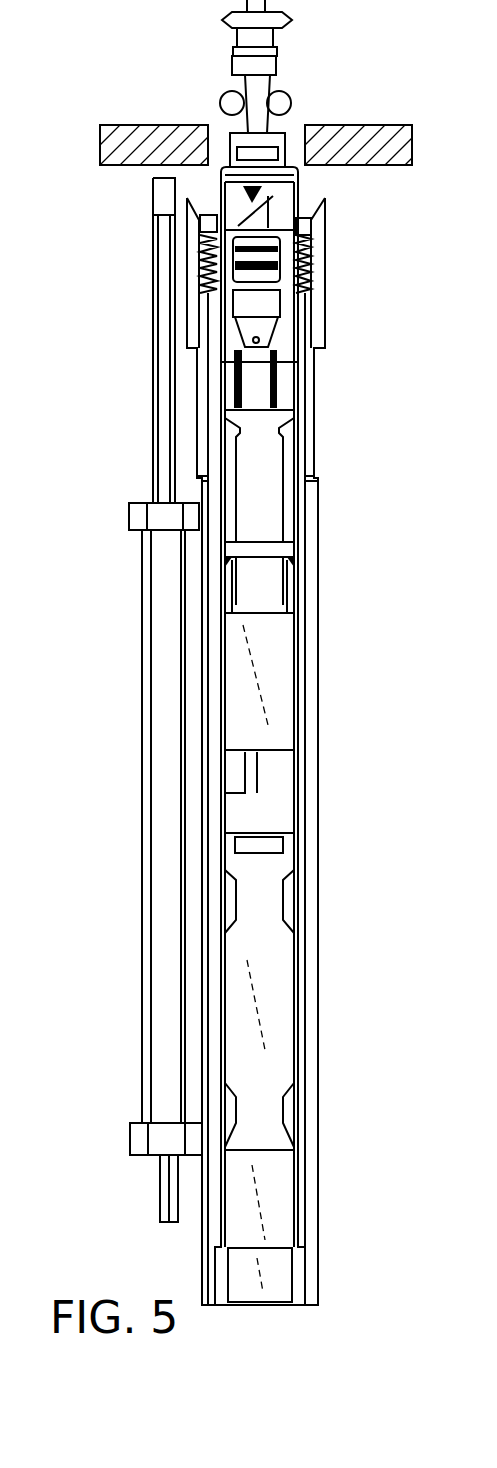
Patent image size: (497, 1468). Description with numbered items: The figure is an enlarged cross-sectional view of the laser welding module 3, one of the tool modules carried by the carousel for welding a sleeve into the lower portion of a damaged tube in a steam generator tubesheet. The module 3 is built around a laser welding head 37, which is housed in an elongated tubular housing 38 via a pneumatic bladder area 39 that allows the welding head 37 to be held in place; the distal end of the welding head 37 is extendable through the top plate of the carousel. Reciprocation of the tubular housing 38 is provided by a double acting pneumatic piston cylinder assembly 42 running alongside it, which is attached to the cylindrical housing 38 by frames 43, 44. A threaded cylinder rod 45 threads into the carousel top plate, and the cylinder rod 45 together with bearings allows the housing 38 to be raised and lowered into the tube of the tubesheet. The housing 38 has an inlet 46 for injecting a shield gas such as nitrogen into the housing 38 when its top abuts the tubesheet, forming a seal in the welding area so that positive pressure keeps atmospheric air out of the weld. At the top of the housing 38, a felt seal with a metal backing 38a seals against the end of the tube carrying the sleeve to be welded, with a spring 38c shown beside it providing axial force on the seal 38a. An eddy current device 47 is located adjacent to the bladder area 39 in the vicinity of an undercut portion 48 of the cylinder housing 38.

The laser welding module 3 is at (335, 786).
The laser welding head 37 is at (300, 76).
The elongated tubular housing 38 is at (192, 288).
The felt seal with a metal backing 38a is at (325, 228).
The spring 38c is at (311, 268).
The pneumatic bladder area 39 is at (297, 985).
The double acting pneumatic piston cylinder assembly 42 is at (150, 770).
The frame 43 is at (137, 1123).
The frame 44 is at (137, 508).
The threaded cylinder rod 45 is at (158, 377).
The inlet 46 is at (200, 478).
The eddy current device 47 is at (278, 1283).
The undercut portion 48 is at (200, 1270).